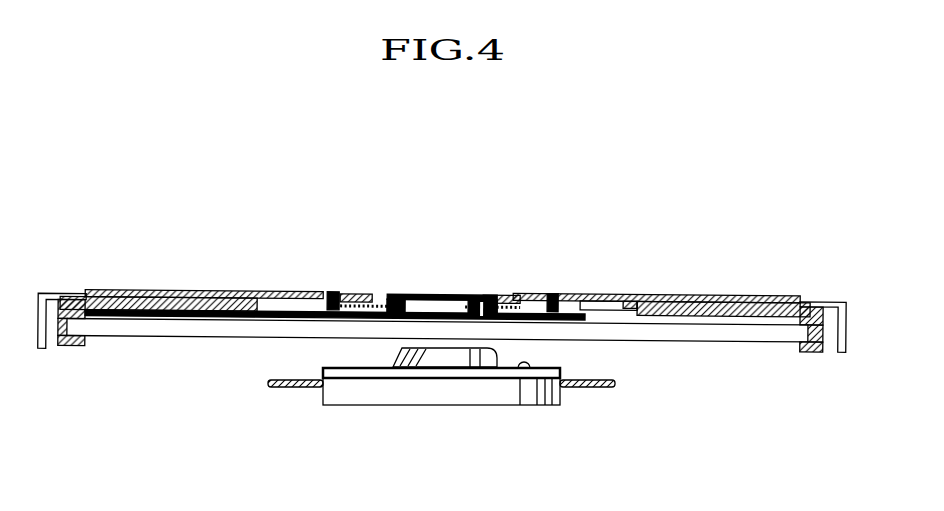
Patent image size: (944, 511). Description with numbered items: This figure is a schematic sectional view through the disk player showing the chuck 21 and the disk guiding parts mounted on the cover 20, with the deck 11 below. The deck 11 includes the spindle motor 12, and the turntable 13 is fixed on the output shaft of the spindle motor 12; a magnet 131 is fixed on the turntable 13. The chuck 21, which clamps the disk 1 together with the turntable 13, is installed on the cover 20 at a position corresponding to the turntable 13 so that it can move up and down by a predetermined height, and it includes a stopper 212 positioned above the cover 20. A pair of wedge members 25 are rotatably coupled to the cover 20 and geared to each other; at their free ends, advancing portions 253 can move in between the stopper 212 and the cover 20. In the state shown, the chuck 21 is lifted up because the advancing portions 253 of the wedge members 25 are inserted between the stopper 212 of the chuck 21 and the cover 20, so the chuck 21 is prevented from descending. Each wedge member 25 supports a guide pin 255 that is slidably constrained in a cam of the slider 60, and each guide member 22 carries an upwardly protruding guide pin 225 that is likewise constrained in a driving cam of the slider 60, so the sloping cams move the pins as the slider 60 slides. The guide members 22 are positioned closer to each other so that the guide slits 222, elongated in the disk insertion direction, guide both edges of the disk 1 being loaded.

The disk 1 is at (102, 340).
The deck 11 is at (287, 387).
The spindle motor 12 is at (385, 398).
The turntable 13 is at (537, 407).
The magnet 131 is at (415, 372).
The cover 20 is at (615, 297).
The chuck 21 is at (456, 290).
The guide member 22 is at (193, 292).
The wedge member 25 is at (292, 320).
The slider 60 is at (678, 295).
The stopper 212 is at (421, 293).
The guide slit 222 is at (65, 342).
The guide pin 225 is at (118, 292).
The advancing portion 253 is at (378, 293).
The guide pin 255 is at (331, 292).